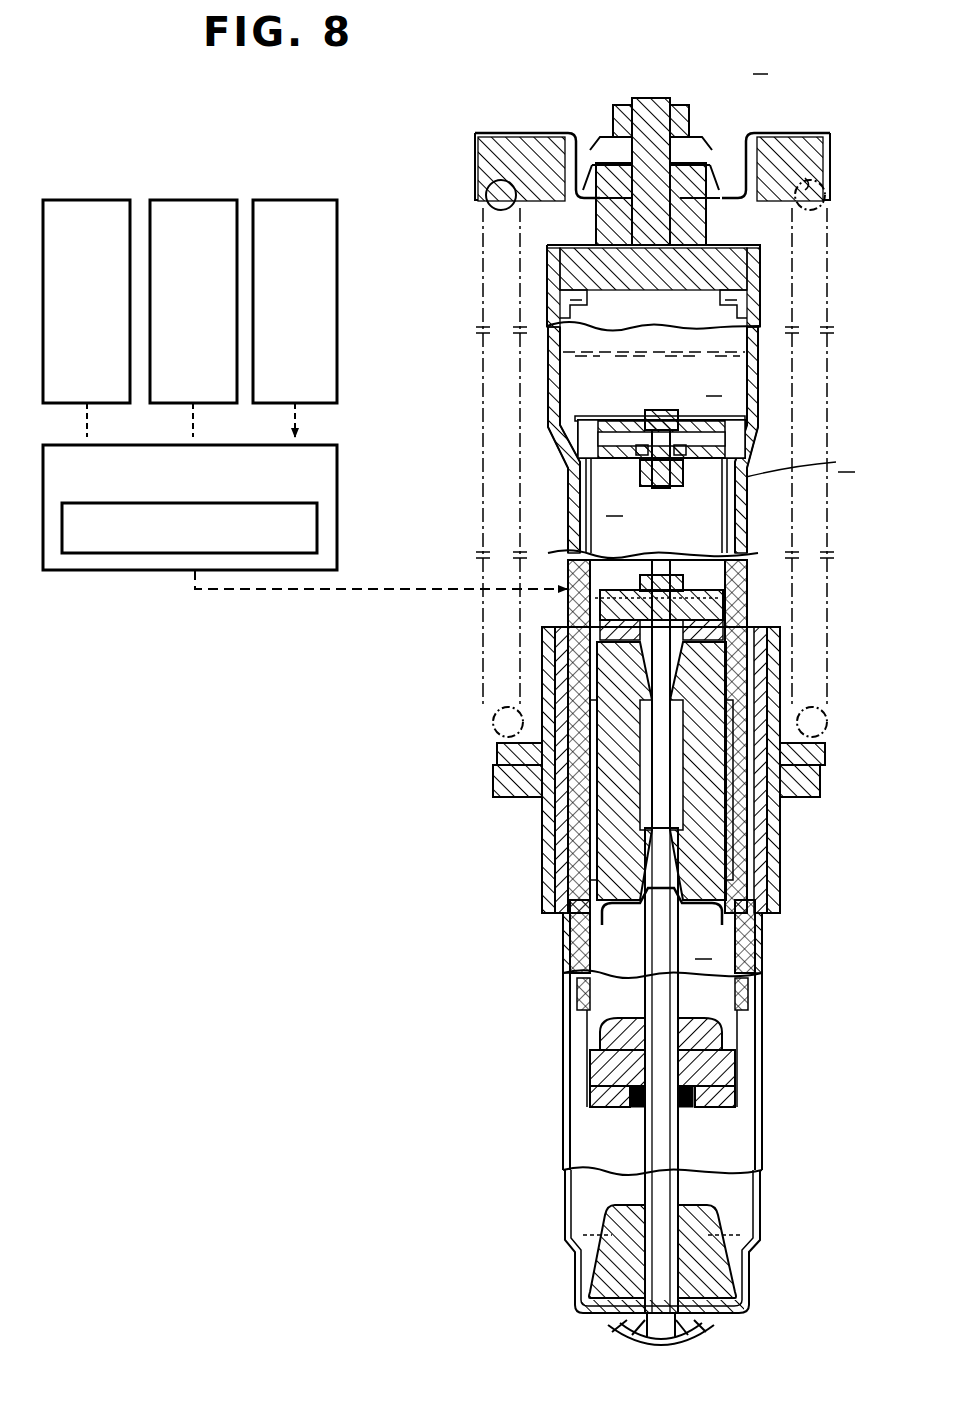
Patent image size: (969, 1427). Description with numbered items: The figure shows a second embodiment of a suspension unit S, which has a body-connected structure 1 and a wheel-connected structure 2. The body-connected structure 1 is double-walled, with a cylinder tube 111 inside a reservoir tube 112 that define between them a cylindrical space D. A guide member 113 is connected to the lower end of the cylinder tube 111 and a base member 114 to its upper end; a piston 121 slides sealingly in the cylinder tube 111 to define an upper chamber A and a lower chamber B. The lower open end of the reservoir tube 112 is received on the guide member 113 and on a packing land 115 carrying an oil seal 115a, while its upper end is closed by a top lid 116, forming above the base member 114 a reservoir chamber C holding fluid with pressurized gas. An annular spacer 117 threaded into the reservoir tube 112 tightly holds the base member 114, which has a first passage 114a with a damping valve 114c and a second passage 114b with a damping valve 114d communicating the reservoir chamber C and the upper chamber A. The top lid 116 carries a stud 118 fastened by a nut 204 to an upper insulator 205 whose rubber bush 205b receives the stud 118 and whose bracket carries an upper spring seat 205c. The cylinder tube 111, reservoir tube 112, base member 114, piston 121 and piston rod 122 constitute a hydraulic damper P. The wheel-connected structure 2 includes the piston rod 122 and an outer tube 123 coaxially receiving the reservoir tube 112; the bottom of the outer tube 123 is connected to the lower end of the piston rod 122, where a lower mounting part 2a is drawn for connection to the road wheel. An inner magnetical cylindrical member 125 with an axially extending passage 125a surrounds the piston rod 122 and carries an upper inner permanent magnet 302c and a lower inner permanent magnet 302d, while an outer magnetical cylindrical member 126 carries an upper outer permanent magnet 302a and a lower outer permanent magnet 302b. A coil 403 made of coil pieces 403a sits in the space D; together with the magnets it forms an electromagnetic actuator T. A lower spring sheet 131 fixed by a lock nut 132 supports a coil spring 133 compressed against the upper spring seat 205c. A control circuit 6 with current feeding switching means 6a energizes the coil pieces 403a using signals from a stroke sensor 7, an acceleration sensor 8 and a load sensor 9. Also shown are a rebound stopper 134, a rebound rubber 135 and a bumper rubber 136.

The stroke sensor 7 is at (78, 200).
The acceleration sensor 8 is at (172, 200).
The load sensor 9 is at (265, 200).
The control circuit 6 is at (338, 448).
The current feeding switching means 6a is at (317, 520).
The suspension unit S is at (760, 62).
The upper insulator 205 is at (772, 135).
The upper spring seat 205c is at (805, 180).
The rubber bush 205b is at (822, 200).
The stud 118 is at (650, 103).
The nut 204 is at (613, 112).
The top lid 116 is at (596, 244).
The body-connected structure 1 is at (770, 272).
The reservoir tube 112 is at (748, 536).
The cylinder tube 111 is at (746, 504).
The second passage 114b is at (654, 372).
The reservoir chamber C is at (714, 384).
The base member 114 is at (718, 422).
The damping valve 114c is at (584, 402).
The first passage 114a is at (582, 446).
The annular spacer 117 is at (735, 425).
The cylindrical space D is at (800, 462).
The upper chamber A is at (614, 504).
The damping valve 114d is at (693, 504).
The hydraulic damper P is at (560, 518).
The piston 121 is at (705, 574).
The coil 403 is at (738, 612).
The coil piece 403a is at (742, 646).
The upper outer permanent magnet 302a is at (556, 636).
The lower inner permanent magnet 302d is at (548, 892).
The upper inner permanent magnet 302c is at (600, 684).
The inner magnetical cylindrical member 125 is at (614, 838).
The outer magnetical cylindrical member 126 is at (548, 814).
The axially extending passage 125a is at (700, 832).
The piston rod 122 is at (655, 1192).
The lower spring sheet 131 is at (500, 748).
The lock nut 132 is at (515, 784).
The coil spring 133 is at (823, 716).
The electromagnetic actuator T is at (772, 808).
The lower outer permanent magnet 302b is at (562, 918).
The lower chamber B is at (662, 924).
The rebound stopper 134 is at (570, 976).
The outer tube 123 is at (565, 1062).
The rebound rubber 135 is at (725, 1022).
The guide member 113 is at (730, 1066).
The packing land 115 is at (720, 1106).
The oil seal 115a is at (622, 1104).
The wheel-connected structure 2 is at (764, 1258).
The bumper rubber 136 is at (702, 1216).
The lower bracket 2a is at (702, 1330).